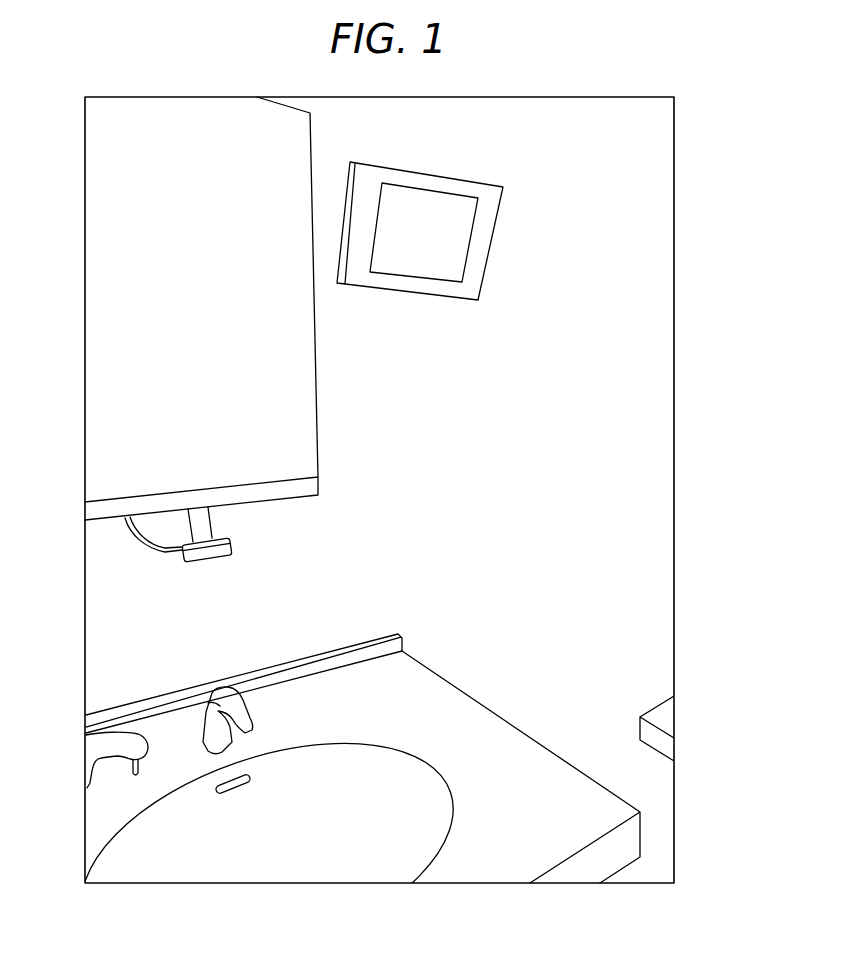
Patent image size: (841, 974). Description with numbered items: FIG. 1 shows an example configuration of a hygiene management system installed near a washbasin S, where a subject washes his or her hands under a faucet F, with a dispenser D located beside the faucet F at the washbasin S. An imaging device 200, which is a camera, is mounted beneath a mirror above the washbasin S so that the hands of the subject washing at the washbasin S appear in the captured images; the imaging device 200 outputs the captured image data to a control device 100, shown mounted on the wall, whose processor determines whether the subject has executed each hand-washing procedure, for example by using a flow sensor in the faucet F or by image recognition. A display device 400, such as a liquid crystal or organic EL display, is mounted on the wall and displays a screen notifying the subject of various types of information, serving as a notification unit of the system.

The control device 100 is at (674, 715).
The imaging device 200 is at (182, 555).
The display device 400 is at (377, 170).
The faucet F is at (86, 715).
The soap dispenser D is at (93, 745).
The washbasin S is at (93, 818).